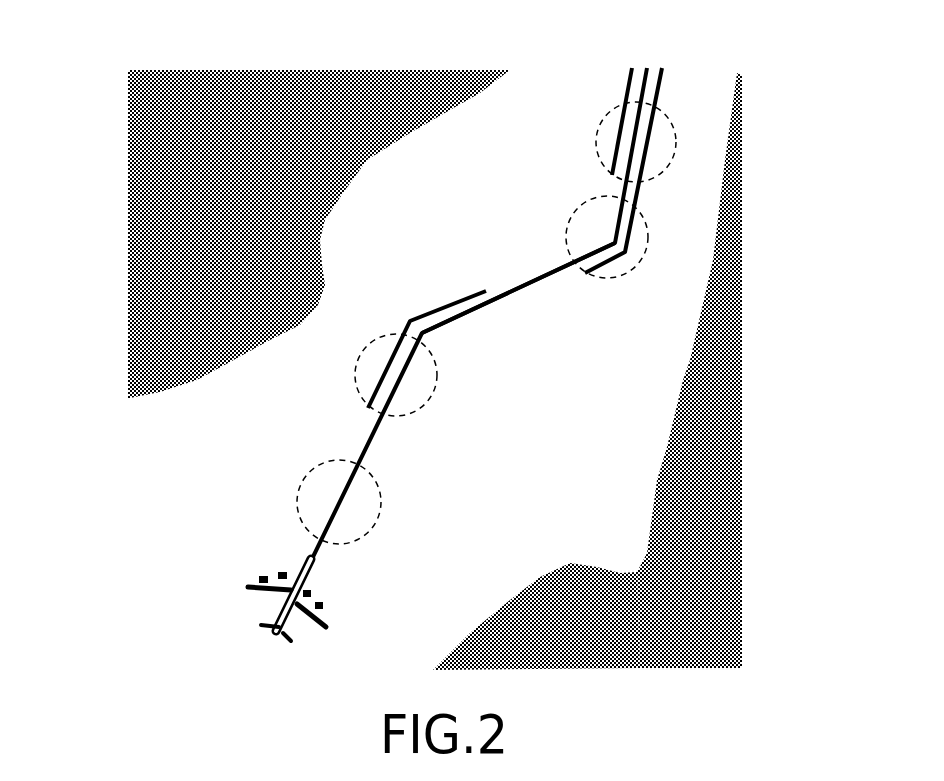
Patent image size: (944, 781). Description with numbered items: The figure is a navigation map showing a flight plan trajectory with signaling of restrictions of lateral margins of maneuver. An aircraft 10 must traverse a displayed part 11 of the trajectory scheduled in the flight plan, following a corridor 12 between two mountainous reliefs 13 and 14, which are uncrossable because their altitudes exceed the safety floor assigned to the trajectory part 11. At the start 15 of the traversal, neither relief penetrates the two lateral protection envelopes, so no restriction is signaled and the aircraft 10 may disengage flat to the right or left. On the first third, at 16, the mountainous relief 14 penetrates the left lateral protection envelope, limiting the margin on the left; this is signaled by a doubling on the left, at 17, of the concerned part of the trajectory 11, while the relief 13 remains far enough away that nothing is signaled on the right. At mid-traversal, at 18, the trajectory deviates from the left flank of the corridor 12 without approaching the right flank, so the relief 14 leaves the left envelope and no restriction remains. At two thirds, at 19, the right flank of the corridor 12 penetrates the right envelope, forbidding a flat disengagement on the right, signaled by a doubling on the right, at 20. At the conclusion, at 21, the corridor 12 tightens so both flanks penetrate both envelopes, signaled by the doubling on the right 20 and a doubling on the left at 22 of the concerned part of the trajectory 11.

The aircraft 10 is at (277, 609).
The displayed part of trajectory 11 is at (342, 445).
The corridor 12 is at (657, 367).
The mountainous relief 13 is at (720, 535).
The mountainous relief 14 is at (163, 236).
The start of the traversal 15 is at (343, 505).
The first third of the traversal 16 is at (405, 372).
The doubling on the left 17 is at (402, 337).
The mid-traversal 18 is at (501, 292).
The two thirds of the traversal 19 is at (612, 243).
The doubling on the right 20 is at (625, 252).
The conclusion of the traversal 21 is at (627, 142).
The doubling on the left 22 is at (625, 100).